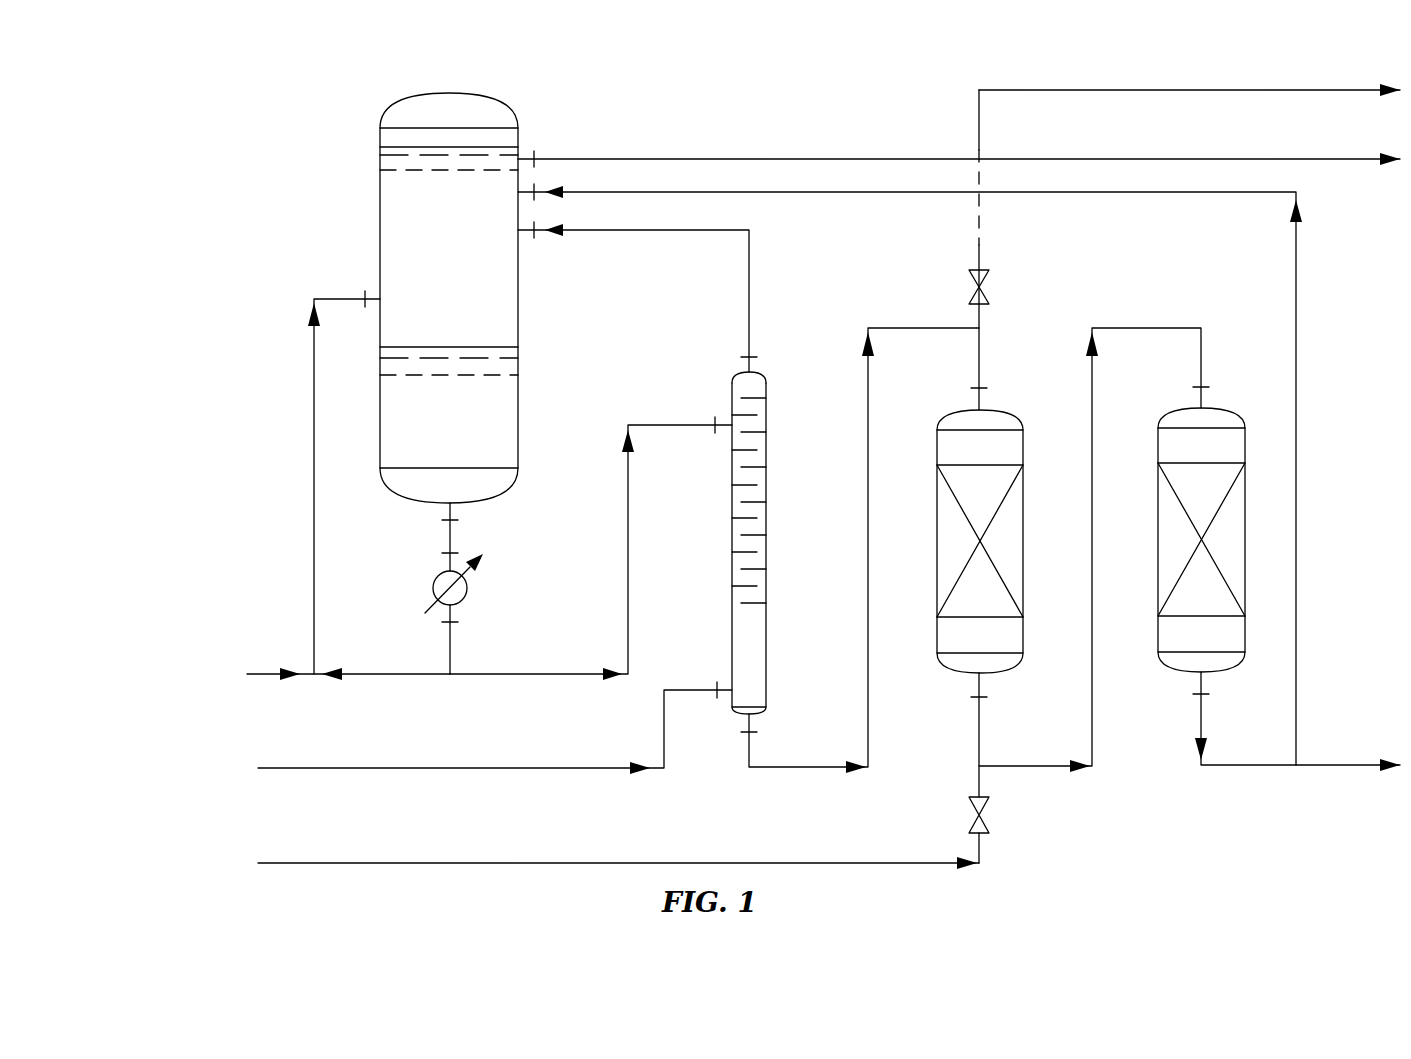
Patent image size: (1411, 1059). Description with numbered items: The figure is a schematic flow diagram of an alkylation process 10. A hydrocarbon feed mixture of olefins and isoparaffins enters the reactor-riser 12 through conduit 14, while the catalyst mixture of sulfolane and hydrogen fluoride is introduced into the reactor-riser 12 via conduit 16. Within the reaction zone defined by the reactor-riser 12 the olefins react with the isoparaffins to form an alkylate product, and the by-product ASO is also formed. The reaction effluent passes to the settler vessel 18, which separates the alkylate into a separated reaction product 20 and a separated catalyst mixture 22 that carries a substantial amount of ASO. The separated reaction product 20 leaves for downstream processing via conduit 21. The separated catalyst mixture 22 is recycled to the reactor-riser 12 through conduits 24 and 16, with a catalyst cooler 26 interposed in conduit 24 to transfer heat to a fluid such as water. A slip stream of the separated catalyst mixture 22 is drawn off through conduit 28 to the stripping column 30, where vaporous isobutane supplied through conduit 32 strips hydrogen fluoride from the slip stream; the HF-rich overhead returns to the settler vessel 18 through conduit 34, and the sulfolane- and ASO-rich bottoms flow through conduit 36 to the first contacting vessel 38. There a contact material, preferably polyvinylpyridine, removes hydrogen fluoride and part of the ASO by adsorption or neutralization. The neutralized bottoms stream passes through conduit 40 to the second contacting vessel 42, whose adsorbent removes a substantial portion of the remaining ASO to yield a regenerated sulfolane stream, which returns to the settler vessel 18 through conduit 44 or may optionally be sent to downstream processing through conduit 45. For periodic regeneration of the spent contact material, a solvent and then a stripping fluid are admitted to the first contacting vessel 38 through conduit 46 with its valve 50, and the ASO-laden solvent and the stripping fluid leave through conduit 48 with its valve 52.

The alkylation process 10 is at (745, 82).
The reactor-riser 12 is at (314, 413).
The conduit 14 is at (268, 673).
The conduit 16 is at (388, 673).
The settler vessel 18 is at (483, 97).
The separated reaction product 20 is at (465, 277).
The conduit 21 is at (613, 159).
The separated catalyst mixture 22 is at (465, 442).
The conduit 24 is at (450, 541).
The catalyst cooler 26 is at (467, 595).
The conduit 28 is at (560, 675).
The stripping column 30 is at (766, 442).
The conduit 32 is at (333, 767).
The conduit 34 is at (749, 265).
The conduit 36 is at (790, 766).
The first contacting vessel 38 is at (1000, 412).
The conduit 40 is at (1020, 765).
The second contacting vessel 42 is at (1220, 411).
The conduit 44 is at (1296, 313).
The conduit 45 is at (1333, 765).
The conduit 46 is at (330, 862).
The conduit 48 is at (1176, 90).
The valve 50 is at (989, 805).
The valve 52 is at (989, 277).